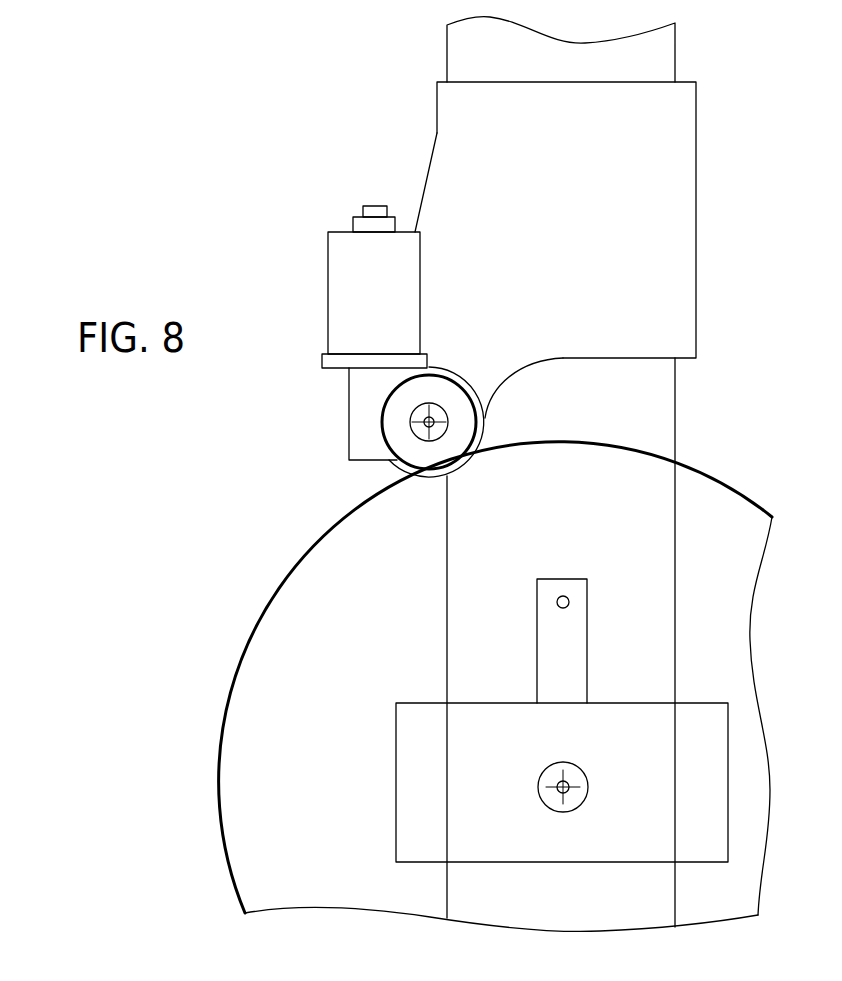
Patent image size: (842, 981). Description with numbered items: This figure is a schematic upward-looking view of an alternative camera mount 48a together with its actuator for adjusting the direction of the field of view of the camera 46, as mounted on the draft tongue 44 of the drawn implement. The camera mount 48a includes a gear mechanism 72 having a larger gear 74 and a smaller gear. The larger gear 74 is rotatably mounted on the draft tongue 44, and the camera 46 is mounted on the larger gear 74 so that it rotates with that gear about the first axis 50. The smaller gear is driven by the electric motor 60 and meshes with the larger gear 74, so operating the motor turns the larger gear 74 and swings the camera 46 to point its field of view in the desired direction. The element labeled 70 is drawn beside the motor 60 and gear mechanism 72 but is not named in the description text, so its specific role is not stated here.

The draft tongue 44 is at (662, 392).
The camera 46 is at (428, 783).
The camera mount 48a is at (367, 239).
The first axis 50 is at (570, 793).
The electric motor 60 is at (353, 280).
The roller bracket 70 is at (363, 451).
The gear mechanism 72 is at (516, 644).
The larger gear 74 is at (710, 505).